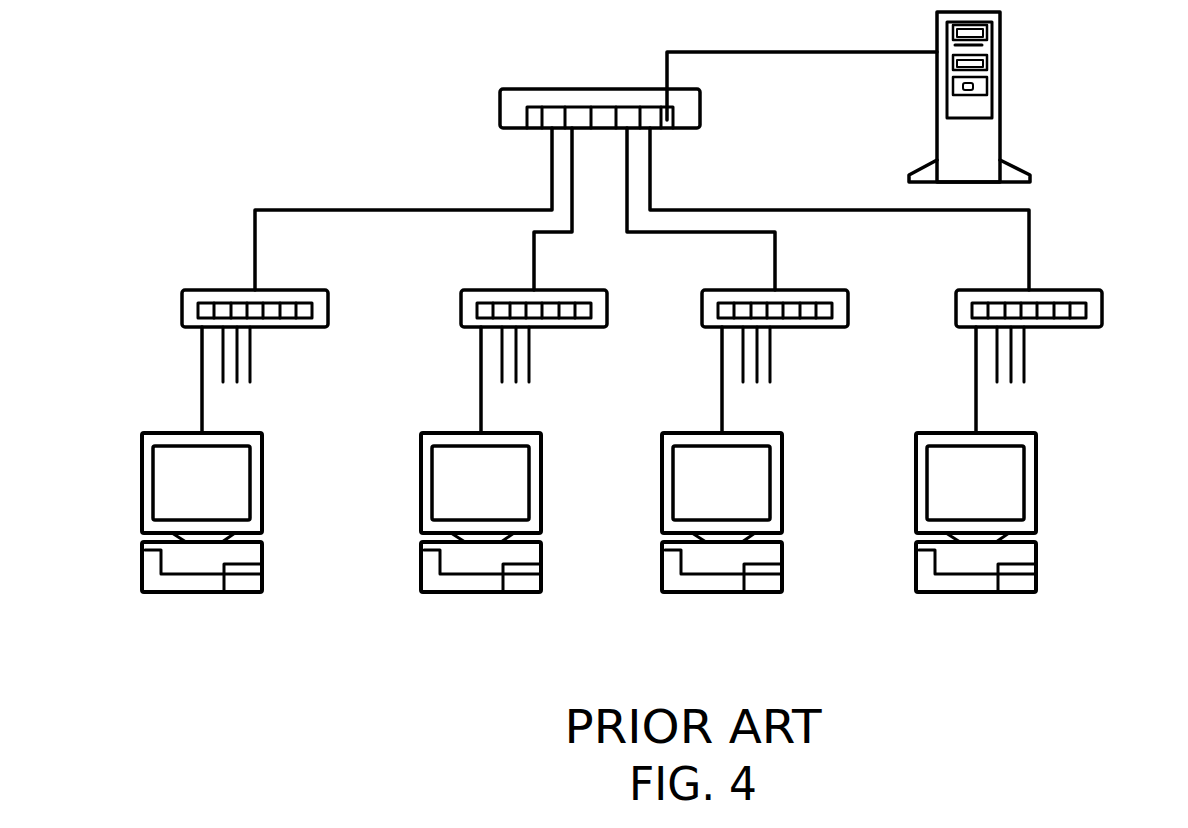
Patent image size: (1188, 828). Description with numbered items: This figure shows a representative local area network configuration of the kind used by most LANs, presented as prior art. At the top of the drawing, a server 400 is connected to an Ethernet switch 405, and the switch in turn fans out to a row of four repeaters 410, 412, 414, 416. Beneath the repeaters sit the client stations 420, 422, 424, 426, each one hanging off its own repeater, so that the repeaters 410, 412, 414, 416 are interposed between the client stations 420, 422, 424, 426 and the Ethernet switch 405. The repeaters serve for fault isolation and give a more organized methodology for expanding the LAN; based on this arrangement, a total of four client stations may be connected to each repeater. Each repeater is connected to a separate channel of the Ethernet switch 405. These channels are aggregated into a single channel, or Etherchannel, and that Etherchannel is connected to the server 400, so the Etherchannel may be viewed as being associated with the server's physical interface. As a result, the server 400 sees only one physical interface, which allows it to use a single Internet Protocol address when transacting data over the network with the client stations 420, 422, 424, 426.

The server 400 is at (987, 135).
The Ethernet switch 405 is at (519, 96).
The repeater 410 is at (317, 322).
The repeater 412 is at (596, 322).
The repeater 414 is at (837, 322).
The repeater 416 is at (1091, 322).
The client station 420 is at (250, 556).
The client station 422 is at (529, 556).
The client station 424 is at (770, 556).
The client station 426 is at (1024, 556).